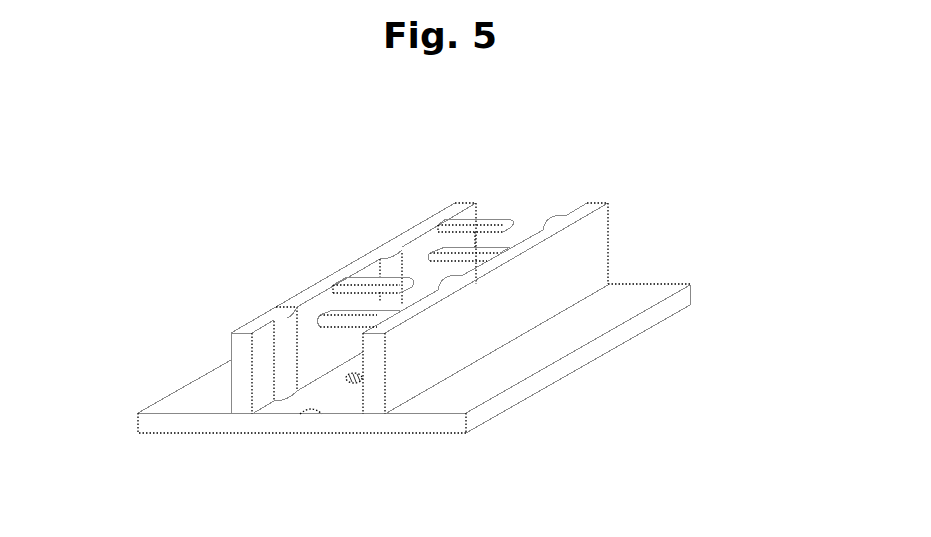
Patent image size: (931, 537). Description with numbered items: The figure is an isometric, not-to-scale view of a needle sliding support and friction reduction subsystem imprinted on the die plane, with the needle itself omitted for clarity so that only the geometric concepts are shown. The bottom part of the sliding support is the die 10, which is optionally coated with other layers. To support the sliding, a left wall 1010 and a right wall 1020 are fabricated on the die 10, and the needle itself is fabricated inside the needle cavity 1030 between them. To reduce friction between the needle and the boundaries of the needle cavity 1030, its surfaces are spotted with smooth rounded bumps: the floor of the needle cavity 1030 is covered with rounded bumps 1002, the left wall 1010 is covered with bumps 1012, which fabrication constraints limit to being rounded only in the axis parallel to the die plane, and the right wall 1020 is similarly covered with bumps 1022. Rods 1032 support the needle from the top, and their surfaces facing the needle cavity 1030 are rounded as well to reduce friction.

The die 10 is at (438, 438).
The rounded bumps 1002 is at (355, 390).
The left wall 1010 is at (228, 342).
The bumps 1012 is at (304, 318).
The right wall 1020 is at (613, 240).
The bumps 1022 is at (410, 290).
The needle cavity 1030 is at (535, 208).
The rods 1032 is at (462, 244).